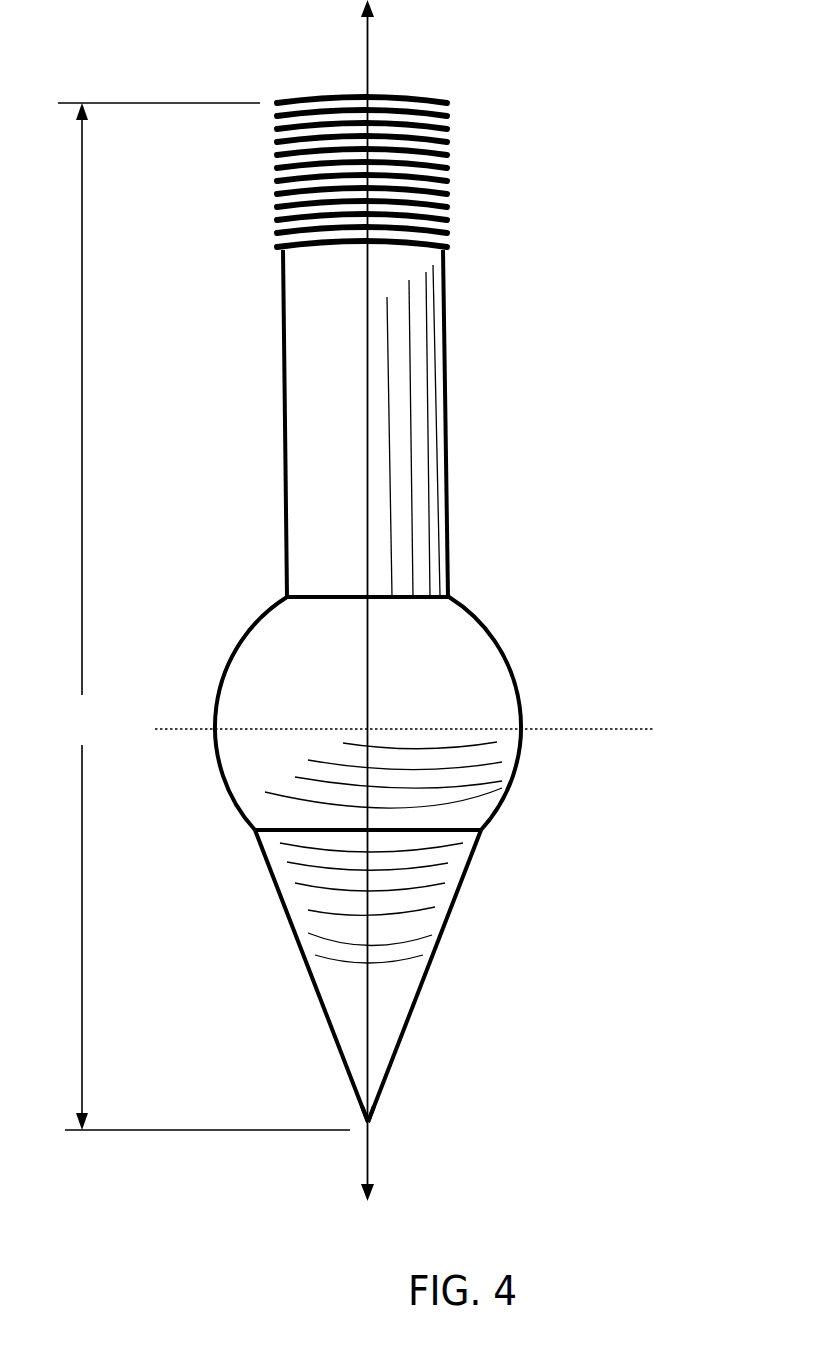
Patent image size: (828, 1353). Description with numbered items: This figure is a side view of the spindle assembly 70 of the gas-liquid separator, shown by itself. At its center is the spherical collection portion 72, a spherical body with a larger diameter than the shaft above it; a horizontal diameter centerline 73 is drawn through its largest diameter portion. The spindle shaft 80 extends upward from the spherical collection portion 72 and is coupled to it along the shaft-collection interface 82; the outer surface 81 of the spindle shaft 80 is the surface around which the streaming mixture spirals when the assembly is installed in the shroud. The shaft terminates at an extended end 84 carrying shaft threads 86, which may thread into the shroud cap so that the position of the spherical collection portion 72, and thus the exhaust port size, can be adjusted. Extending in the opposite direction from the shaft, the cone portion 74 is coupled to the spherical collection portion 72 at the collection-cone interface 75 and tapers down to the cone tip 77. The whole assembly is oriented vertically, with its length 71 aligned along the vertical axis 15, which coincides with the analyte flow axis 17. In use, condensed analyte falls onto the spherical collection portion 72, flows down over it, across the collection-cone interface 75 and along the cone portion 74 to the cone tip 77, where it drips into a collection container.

The vertical axis 15 is at (367, 50).
The analyte flow axis 17 is at (367, 83).
The spindle assembly 70 is at (262, 267).
The length 71 is at (204, 616).
The spherical collection portion 72 is at (448, 648).
The diameter centerline 73 is at (507, 728).
The cone portion 74 is at (310, 917).
The collection-cone interface 75 is at (480, 827).
The cone tip 77 is at (370, 1122).
The spindle shaft 80 is at (413, 327).
The outer surface 81 is at (422, 405).
The shaft-collection interface 82 is at (447, 583).
The extended end 84 is at (408, 93).
The shaft threads 86 is at (447, 133).